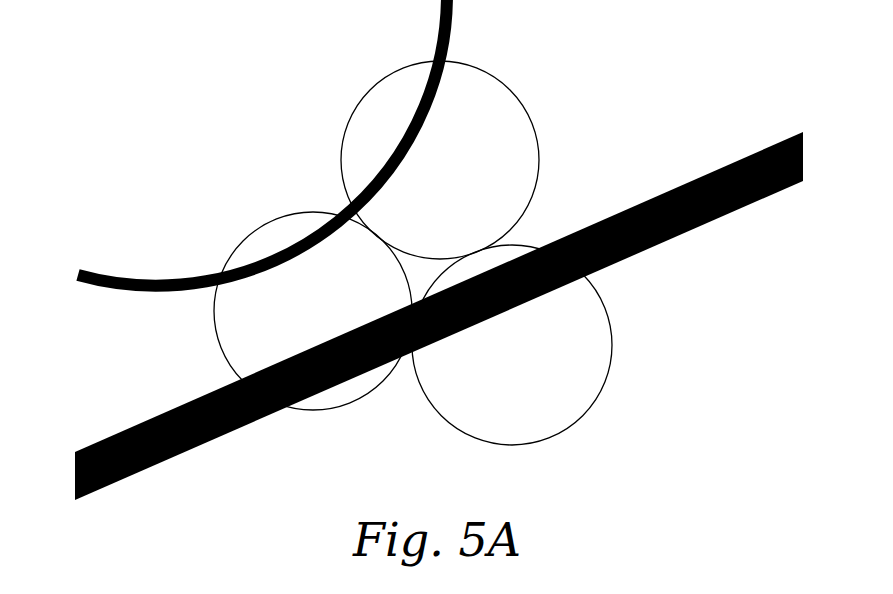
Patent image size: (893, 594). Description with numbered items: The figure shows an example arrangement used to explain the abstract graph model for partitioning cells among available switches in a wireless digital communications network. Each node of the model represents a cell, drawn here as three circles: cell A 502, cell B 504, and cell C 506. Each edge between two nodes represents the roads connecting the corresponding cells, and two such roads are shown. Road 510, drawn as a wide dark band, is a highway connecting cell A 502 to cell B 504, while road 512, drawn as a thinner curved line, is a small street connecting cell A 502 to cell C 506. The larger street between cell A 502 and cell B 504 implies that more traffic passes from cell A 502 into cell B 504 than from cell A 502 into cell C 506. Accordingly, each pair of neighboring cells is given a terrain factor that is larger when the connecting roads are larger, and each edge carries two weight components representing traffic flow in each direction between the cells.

The cell A 502 is at (267, 221).
The cell B 504 is at (613, 346).
The cell C 506 is at (540, 163).
The road 510 is at (725, 217).
The road 512 is at (103, 290).